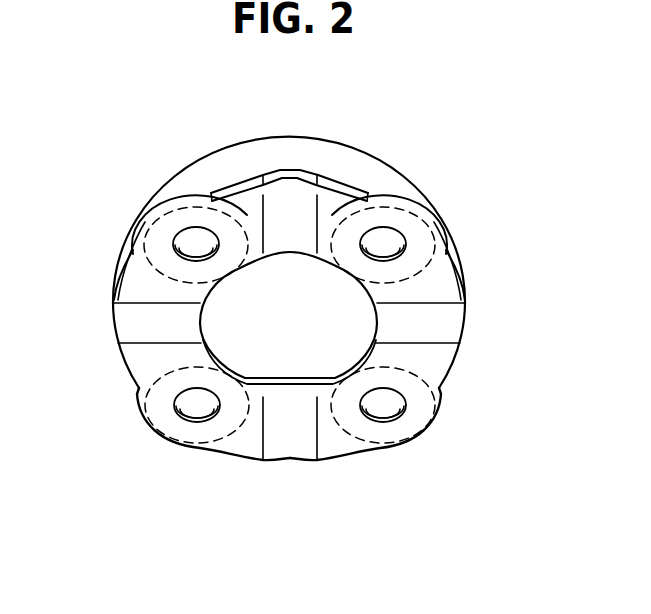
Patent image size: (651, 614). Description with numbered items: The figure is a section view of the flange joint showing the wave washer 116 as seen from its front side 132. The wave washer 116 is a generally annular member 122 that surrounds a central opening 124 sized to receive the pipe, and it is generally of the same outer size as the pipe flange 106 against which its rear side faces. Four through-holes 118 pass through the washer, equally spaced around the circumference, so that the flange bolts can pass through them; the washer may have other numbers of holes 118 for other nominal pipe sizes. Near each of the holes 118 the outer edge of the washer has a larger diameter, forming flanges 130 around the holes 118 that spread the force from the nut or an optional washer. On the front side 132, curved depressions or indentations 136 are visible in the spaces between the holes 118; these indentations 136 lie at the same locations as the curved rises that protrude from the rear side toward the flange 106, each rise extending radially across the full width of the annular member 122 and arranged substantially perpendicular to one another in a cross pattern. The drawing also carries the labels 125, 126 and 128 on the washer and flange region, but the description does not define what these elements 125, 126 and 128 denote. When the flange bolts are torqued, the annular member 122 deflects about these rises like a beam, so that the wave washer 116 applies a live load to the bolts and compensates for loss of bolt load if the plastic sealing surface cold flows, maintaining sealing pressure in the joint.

The flange 106 is at (228, 131).
The wave washer 116 is at (331, 205).
The holes 118 is at (378, 237).
The annular member 122 is at (445, 278).
The opening 124 is at (299, 356).
The central bore 125 is at (377, 323).
The left side face 126 is at (143, 325).
The upper left lobe rim 128 is at (160, 190).
The flanges 130 is at (397, 428).
The front side 132 is at (245, 441).
The indentations 136 is at (442, 322).